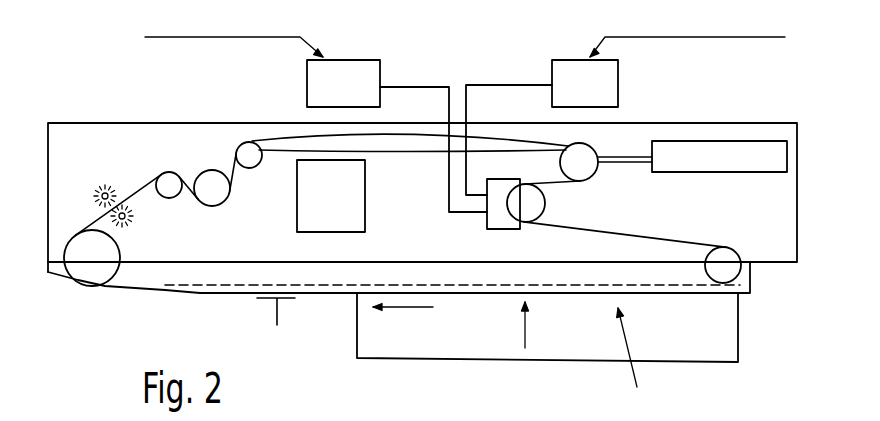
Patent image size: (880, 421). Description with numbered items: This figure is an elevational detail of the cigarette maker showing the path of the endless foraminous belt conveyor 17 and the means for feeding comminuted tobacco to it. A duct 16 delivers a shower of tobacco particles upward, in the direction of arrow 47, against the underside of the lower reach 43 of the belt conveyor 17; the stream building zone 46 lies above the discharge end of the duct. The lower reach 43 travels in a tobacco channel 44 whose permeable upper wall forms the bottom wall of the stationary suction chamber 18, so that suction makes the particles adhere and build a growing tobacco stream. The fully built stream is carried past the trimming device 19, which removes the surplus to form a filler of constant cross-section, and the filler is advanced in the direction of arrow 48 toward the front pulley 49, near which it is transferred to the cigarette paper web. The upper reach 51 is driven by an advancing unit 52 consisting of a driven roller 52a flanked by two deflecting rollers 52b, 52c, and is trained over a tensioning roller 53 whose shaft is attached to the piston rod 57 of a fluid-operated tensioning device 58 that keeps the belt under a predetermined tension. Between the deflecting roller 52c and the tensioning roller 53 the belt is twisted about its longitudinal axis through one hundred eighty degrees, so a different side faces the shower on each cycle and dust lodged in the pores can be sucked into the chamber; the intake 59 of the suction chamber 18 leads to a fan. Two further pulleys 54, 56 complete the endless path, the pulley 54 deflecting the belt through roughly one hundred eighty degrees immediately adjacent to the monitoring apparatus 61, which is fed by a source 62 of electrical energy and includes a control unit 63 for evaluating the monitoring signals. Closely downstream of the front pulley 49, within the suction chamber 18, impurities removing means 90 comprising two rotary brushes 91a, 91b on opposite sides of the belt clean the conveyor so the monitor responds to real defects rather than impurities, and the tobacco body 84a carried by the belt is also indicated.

The duct 16 is at (725, 342).
The endless foraminous belt conveyor 17 is at (647, 230).
The suction chamber 18 is at (70, 122).
The trimming device 19 is at (270, 308).
The lower reach 43 is at (205, 297).
The tobacco channel 44 is at (150, 292).
The stream building zone 46 is at (635, 357).
The arrow 47 is at (525, 335).
The arrow 48 is at (415, 313).
The front pulley 49 is at (85, 292).
The upper reach 51 is at (416, 115).
The advancing unit 52 is at (192, 162).
The driven roller 52a is at (213, 168).
The deflecting roller 52b is at (166, 170).
The deflecting roller 52c is at (251, 140).
The tensioning roller 53 is at (582, 160).
The pulley 54 is at (531, 185).
The pulley 56 is at (742, 252).
The piston rod 57 is at (630, 156).
The fluid-operated tensioning device 58 is at (705, 155).
The intake of the suction chamber 59 is at (296, 124).
The monitoring apparatus 61 is at (497, 178).
The source of electrical energy 62 is at (566, 58).
The control unit 63 is at (348, 58).
The sheet 84a is at (404, 413).
The impurities removing means 90 is at (122, 175).
The rotary brush 91a is at (98, 192).
The rotary brush 91b is at (128, 224).